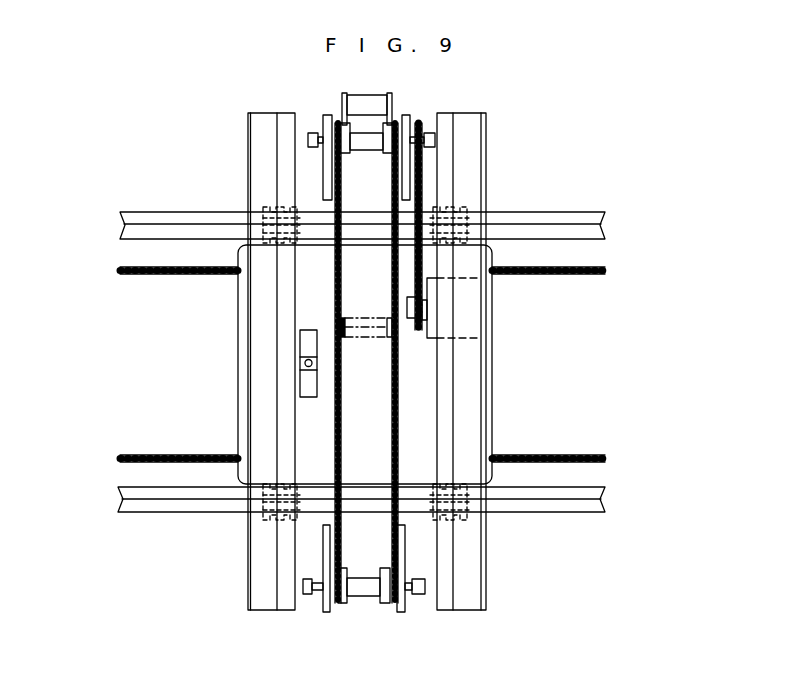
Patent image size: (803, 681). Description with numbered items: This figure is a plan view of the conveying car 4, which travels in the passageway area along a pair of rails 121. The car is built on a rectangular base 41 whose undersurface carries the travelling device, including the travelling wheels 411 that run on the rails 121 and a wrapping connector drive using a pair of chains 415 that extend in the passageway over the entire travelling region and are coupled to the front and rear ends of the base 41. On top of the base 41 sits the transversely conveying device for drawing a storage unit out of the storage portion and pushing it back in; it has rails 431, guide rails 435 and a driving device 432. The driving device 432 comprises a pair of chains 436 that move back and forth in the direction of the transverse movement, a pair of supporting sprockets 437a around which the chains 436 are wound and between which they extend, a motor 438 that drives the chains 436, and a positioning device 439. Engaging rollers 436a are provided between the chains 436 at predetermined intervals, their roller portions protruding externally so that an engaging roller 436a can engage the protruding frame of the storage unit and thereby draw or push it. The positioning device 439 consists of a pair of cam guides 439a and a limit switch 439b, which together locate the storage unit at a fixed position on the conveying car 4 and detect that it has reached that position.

The conveying car 4 is at (490, 170).
The rectangular base 41 is at (237, 346).
The rails 121 is at (553, 212).
The travelling wheels 411 is at (266, 222).
The chains 415 is at (553, 275).
The rails 431 is at (282, 543).
The driving device 432 is at (318, 604).
The guide rails 435 is at (262, 578).
The chains 436 is at (392, 370).
The engaging rollers 436a is at (367, 97).
The supporting sprockets 437a is at (383, 603).
The motor 438 is at (470, 319).
The positioning device 439 is at (216, 378).
The cam guides 439a is at (305, 383).
The limit switch 439b is at (303, 363).